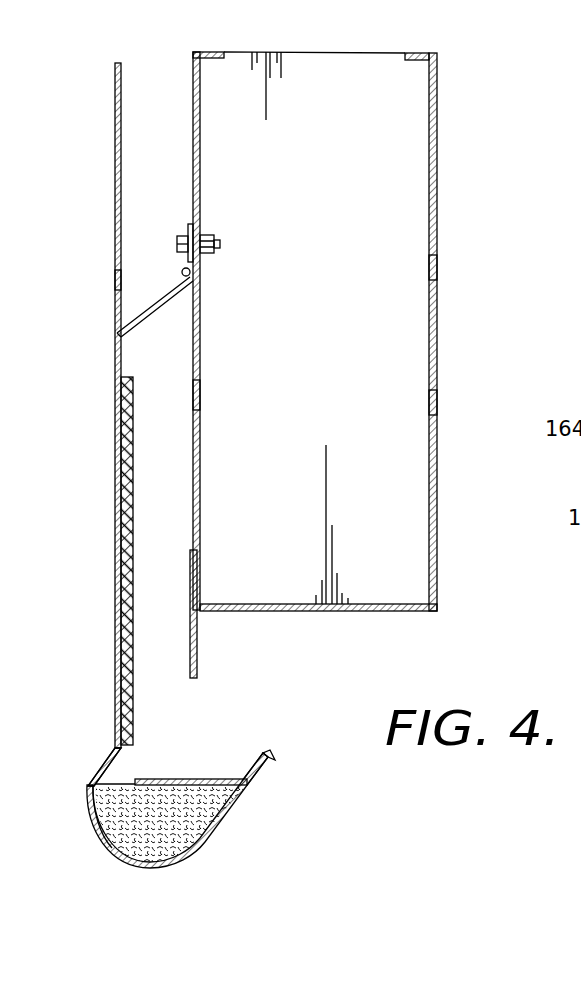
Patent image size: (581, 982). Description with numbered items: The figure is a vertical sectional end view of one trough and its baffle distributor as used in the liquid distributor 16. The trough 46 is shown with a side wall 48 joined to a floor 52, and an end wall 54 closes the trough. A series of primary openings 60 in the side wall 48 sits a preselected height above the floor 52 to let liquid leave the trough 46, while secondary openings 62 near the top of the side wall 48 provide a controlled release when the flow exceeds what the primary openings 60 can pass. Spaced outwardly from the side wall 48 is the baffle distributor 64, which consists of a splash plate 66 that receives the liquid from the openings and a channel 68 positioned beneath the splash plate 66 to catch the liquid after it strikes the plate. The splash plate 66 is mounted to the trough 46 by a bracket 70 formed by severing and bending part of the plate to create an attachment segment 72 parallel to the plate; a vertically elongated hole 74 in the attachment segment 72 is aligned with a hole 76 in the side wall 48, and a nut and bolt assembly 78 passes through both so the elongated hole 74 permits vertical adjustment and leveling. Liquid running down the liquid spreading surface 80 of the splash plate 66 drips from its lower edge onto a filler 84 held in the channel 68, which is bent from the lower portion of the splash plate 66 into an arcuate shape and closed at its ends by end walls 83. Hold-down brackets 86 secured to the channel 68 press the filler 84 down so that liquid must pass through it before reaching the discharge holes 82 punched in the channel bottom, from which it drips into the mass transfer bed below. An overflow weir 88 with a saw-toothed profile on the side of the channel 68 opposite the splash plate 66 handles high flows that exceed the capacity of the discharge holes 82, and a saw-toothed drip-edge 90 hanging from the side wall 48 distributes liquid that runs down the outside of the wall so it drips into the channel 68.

The liquid distributor 16 is at (426, 54).
The trough 46 is at (437, 186).
The side wall 48 is at (437, 268).
The floor 52 is at (368, 606).
The end wall 54 is at (415, 403).
The primary openings 60 is at (200, 395).
The secondary openings 62 is at (198, 118).
The baffle distributor 64 is at (116, 184).
The splash plate 66 is at (116, 280).
The channel 68 is at (118, 765).
The bracket 70 is at (150, 318).
The attachment segment 72 is at (200, 278).
The vertically elongated hole 74 is at (190, 237).
The hole 76 is at (205, 238).
The nut and bolt assembly 78 is at (180, 248).
The liquid spreading surface 80 is at (133, 637).
The discharge holes 82 is at (150, 868).
The end walls 83 is at (108, 785).
The filler 84 is at (215, 797).
The hold-down brackets 86 is at (213, 781).
The overflow weir 88 is at (274, 760).
The drip-edge 90 is at (197, 652).